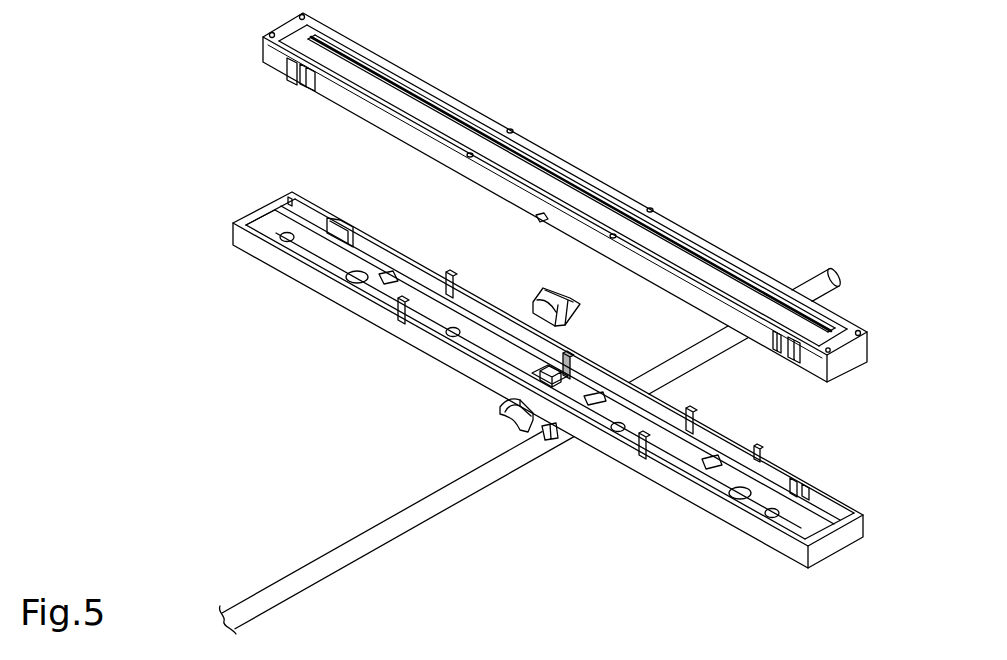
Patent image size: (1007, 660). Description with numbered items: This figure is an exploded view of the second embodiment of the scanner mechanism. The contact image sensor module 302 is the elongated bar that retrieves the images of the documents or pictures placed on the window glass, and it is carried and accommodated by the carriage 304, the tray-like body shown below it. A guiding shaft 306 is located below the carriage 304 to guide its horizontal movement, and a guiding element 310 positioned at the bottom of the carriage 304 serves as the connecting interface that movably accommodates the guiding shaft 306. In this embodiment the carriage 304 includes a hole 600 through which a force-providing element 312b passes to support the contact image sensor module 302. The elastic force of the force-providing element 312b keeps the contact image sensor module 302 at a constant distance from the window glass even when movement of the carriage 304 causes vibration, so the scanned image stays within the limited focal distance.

The contact image sensor module 302 is at (673, 256).
The carriage 304 is at (828, 546).
The guiding shaft 306 is at (372, 531).
The guiding element 310 is at (500, 405).
The force-providing element 312b is at (568, 307).
The hole 600 is at (556, 382).